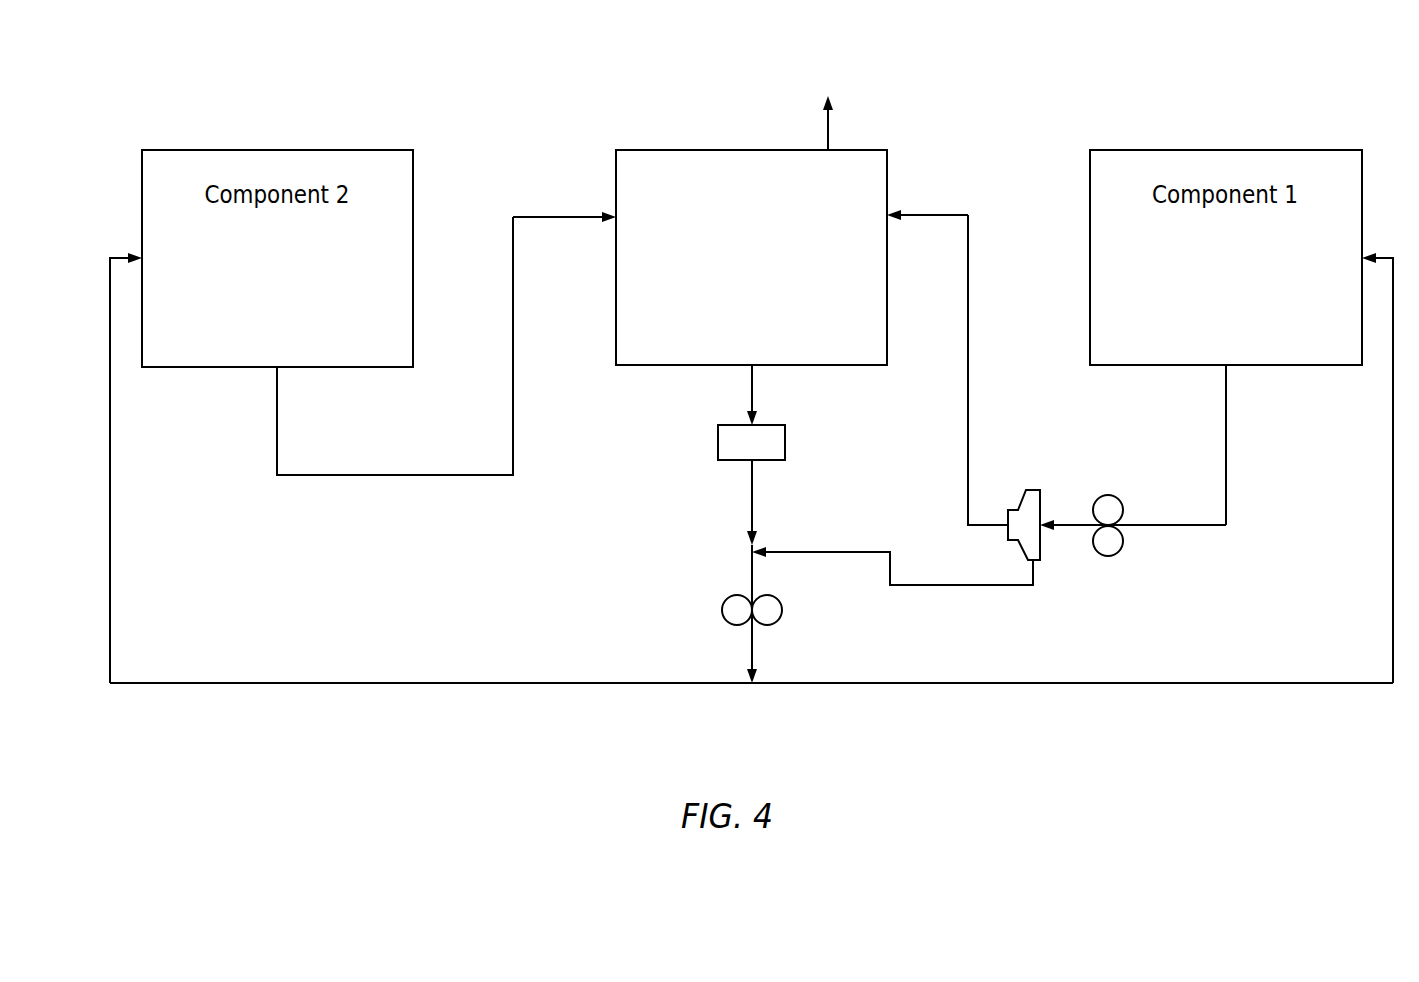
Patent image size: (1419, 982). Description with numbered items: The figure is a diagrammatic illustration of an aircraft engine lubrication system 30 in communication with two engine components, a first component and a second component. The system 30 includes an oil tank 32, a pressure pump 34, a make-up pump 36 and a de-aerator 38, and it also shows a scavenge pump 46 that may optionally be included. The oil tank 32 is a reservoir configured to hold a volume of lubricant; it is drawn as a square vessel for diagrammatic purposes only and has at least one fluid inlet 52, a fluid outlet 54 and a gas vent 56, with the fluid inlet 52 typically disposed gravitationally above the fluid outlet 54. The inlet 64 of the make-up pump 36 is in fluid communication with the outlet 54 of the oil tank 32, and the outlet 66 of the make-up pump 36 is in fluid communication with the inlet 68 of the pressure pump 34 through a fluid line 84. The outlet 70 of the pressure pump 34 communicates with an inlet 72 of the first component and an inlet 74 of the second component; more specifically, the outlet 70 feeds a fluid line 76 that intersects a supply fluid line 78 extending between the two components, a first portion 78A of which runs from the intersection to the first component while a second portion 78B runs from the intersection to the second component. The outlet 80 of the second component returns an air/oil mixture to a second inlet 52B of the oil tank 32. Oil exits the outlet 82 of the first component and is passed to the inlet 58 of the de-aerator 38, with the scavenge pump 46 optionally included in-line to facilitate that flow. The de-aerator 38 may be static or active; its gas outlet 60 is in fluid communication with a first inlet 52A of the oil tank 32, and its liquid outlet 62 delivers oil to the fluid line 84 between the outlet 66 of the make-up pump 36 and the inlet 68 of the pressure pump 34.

The aircraft engine lubrication system 30 is at (1140, 106).
The oil tank 32 is at (737, 226).
The pressure pump 34 is at (735, 627).
The make-up pump 36 is at (787, 442).
The de-aerator 38 is at (1043, 545).
The scavenge pump 46 is at (1108, 557).
The fluid inlet 52 is at (724, 207).
The first inlet 52A is at (890, 212).
The second inlet 52B is at (612, 222).
The fluid outlet 54 is at (757, 372).
The gas vent 56 is at (833, 150).
The inlet 58 is at (1045, 520).
The gas outlet 60 is at (1005, 535).
The liquid outlet 62 is at (1030, 565).
The inlet 64 is at (748, 423).
The outlet 66 is at (748, 463).
The inlet 68 is at (748, 597).
The outlet 70 is at (760, 625).
The inlet 72 is at (1365, 255).
The inlet 74 is at (140, 255).
The fluid line 76 is at (758, 690).
The supply fluid line 78 is at (751, 733).
The first portion 78A is at (933, 684).
The second portion 78B is at (481, 684).
The outlet 80 is at (275, 372).
The outlet 82 is at (1228, 372).
The fluid line 84 is at (755, 515).